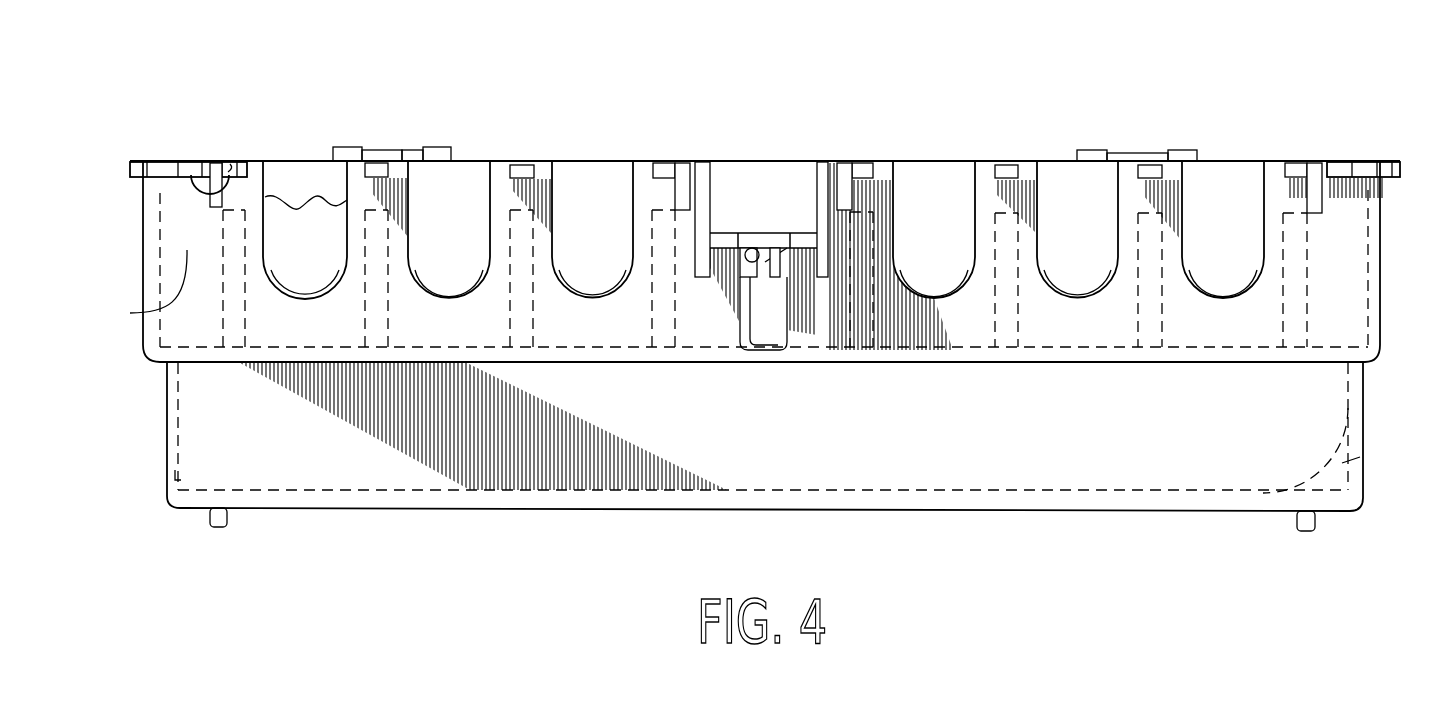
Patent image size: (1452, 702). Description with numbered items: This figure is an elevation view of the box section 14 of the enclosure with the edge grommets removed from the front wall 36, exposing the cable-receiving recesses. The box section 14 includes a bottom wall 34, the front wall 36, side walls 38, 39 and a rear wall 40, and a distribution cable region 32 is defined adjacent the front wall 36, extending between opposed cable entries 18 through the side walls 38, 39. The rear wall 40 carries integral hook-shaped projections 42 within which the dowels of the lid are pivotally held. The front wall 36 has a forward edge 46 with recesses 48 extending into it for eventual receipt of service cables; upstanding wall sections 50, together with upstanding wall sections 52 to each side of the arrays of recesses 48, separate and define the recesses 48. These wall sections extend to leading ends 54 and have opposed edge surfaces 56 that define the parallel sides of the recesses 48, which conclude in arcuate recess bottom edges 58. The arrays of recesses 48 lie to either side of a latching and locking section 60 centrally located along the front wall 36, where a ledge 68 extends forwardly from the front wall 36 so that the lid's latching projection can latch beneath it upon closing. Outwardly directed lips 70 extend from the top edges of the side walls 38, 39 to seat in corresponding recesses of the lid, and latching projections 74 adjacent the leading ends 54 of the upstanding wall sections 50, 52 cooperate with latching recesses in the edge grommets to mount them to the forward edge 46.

The box section 14 is at (1024, 108).
The cable entries 18 is at (167, 467).
The distribution cable region 32 is at (1362, 410).
The bottom wall 34 is at (471, 511).
The front wall 36 is at (142, 292).
The side wall 38 is at (143, 193).
The side wall 39 is at (1383, 257).
The rear wall 40 is at (1227, 197).
The hook-shaped projections 42 is at (442, 157).
The forward edge 46 is at (542, 160).
The recesses 48 is at (933, 233).
The upstanding wall sections 50 is at (327, 177).
The upstanding wall sections 52 is at (257, 167).
The leading ends 54 is at (237, 158).
The opposed edge surfaces 56 is at (306, 189).
The arcuate recess bottom edges 58 is at (305, 230).
The latching and locking section 60 is at (797, 237).
The ledge 68 is at (760, 253).
The lips 70 is at (131, 166).
The latching projections 74 is at (195, 173).